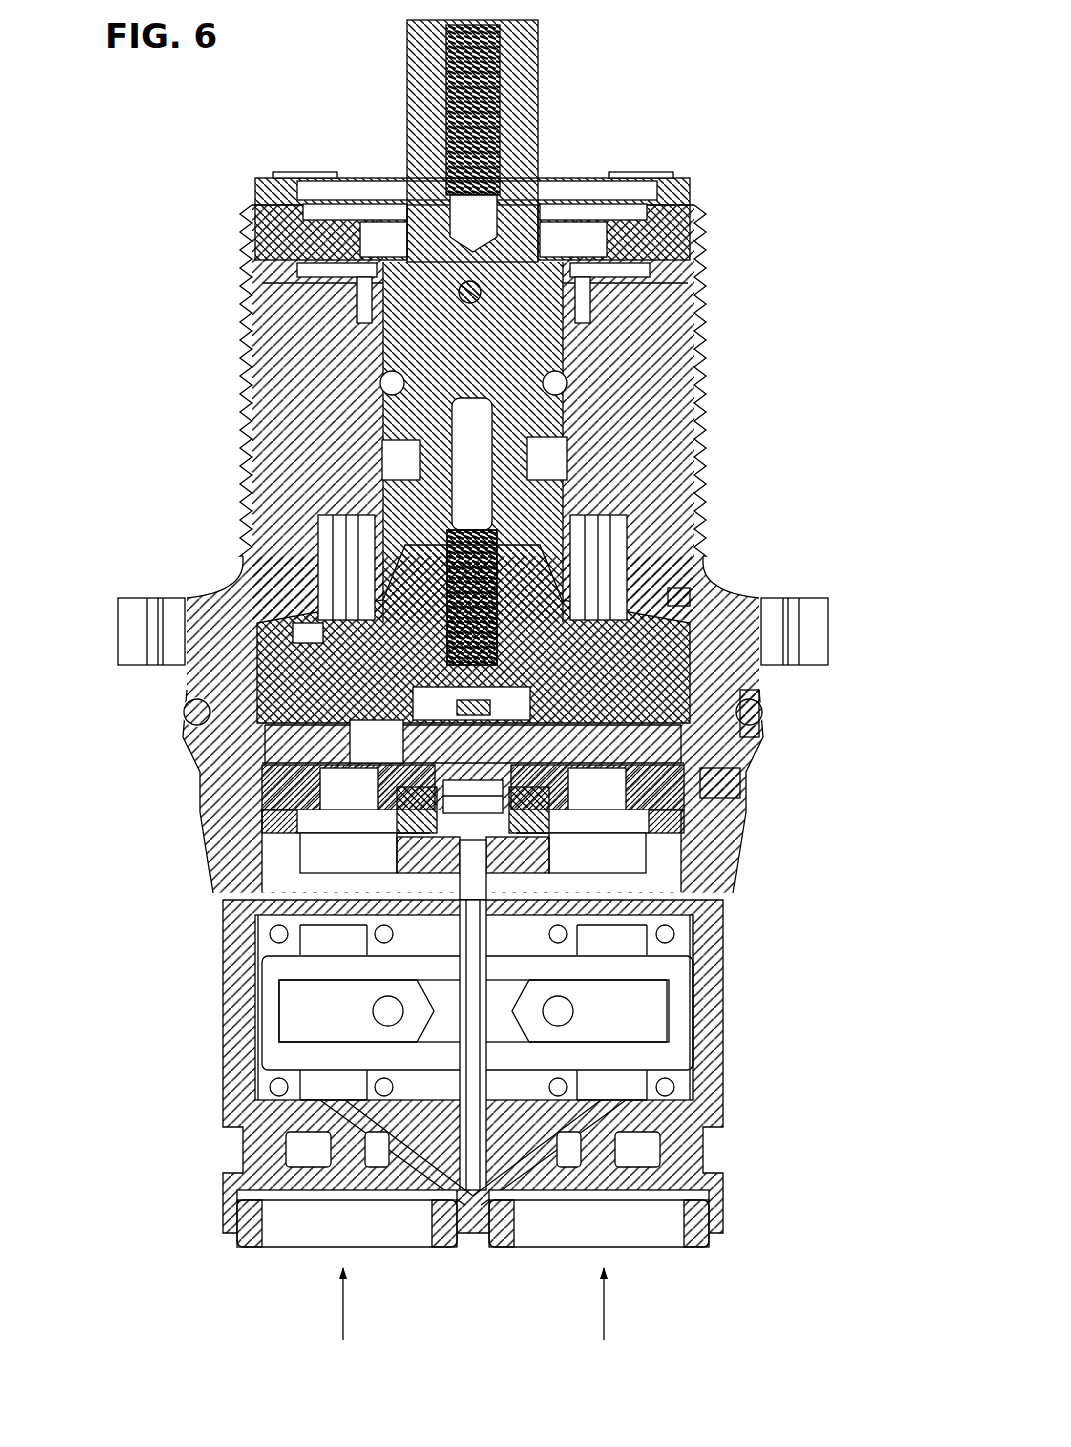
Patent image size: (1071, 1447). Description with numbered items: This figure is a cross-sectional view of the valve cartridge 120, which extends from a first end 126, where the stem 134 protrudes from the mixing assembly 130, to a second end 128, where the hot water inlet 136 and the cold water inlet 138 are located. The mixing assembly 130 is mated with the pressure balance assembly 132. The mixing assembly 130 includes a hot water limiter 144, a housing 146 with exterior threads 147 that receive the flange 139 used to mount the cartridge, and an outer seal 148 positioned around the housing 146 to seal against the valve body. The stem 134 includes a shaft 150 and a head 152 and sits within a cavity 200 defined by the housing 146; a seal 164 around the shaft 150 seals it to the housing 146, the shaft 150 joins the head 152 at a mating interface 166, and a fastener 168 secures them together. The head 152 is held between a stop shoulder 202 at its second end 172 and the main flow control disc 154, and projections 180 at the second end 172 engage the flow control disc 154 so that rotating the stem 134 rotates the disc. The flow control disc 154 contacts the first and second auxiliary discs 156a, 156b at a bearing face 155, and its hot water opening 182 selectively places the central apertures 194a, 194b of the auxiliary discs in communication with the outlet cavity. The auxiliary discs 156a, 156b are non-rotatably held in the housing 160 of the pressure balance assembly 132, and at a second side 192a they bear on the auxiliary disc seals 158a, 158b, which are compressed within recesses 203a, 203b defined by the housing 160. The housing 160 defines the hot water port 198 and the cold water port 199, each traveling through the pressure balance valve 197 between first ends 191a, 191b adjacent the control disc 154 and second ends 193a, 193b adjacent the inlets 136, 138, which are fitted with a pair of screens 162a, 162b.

The valve cartridge 120 is at (757, 84).
The first end 126 is at (170, 190).
The second end 128 is at (790, 1298).
The mixing assembly 130 is at (135, 367).
The pressure balance assembly 132 is at (800, 1042).
The stem 134 is at (556, 74).
The hot water inlet 136 is at (602, 1319).
The cold water inlet 138 is at (347, 1319).
The flange 139 is at (822, 622).
The hot water limiter 144 is at (648, 235).
The housing 146 is at (685, 568).
The exterior threads 147 is at (706, 460).
The outer seal 148 is at (777, 727).
The shaft 150 is at (515, 135).
The head 152 is at (380, 580).
The main flow control disc 154 is at (293, 746).
The bearing face 155 is at (747, 783).
The first auxiliary disc 156a is at (610, 790).
The second auxiliary disc 156b is at (335, 795).
The first auxiliary disc seal 158a is at (640, 800).
The second auxiliary disc seal 158b is at (355, 862).
The housing 160 is at (705, 1095).
The first screen 162a is at (692, 1228).
The second screen 162b is at (253, 1227).
The seal 164 is at (557, 374).
The mating interface 166 is at (548, 470).
The fastener 168 is at (478, 522).
The second end 172 is at (300, 630).
The projections 180 is at (300, 760).
The hot water opening 182 is at (372, 740).
The first end of hot water port 191a is at (562, 872).
The first end of cold water port 191b is at (455, 872).
The second side of first auxiliary disc 192a is at (560, 820).
The second end of hot water port 193a is at (642, 1155).
The second end of cold water port 193b is at (323, 1153).
The central aperture of first auxiliary disc 194a is at (545, 820).
The central aperture of second auxiliary disc 194b is at (365, 875).
The pressure balance valve 197 is at (362, 1014).
The hot water port 198 is at (590, 862).
The cold water port 199 is at (345, 880).
The cavity 200 is at (398, 458).
The stop shoulder 202 is at (682, 598).
The first recess 203a is at (522, 822).
The second recess 203b is at (323, 848).